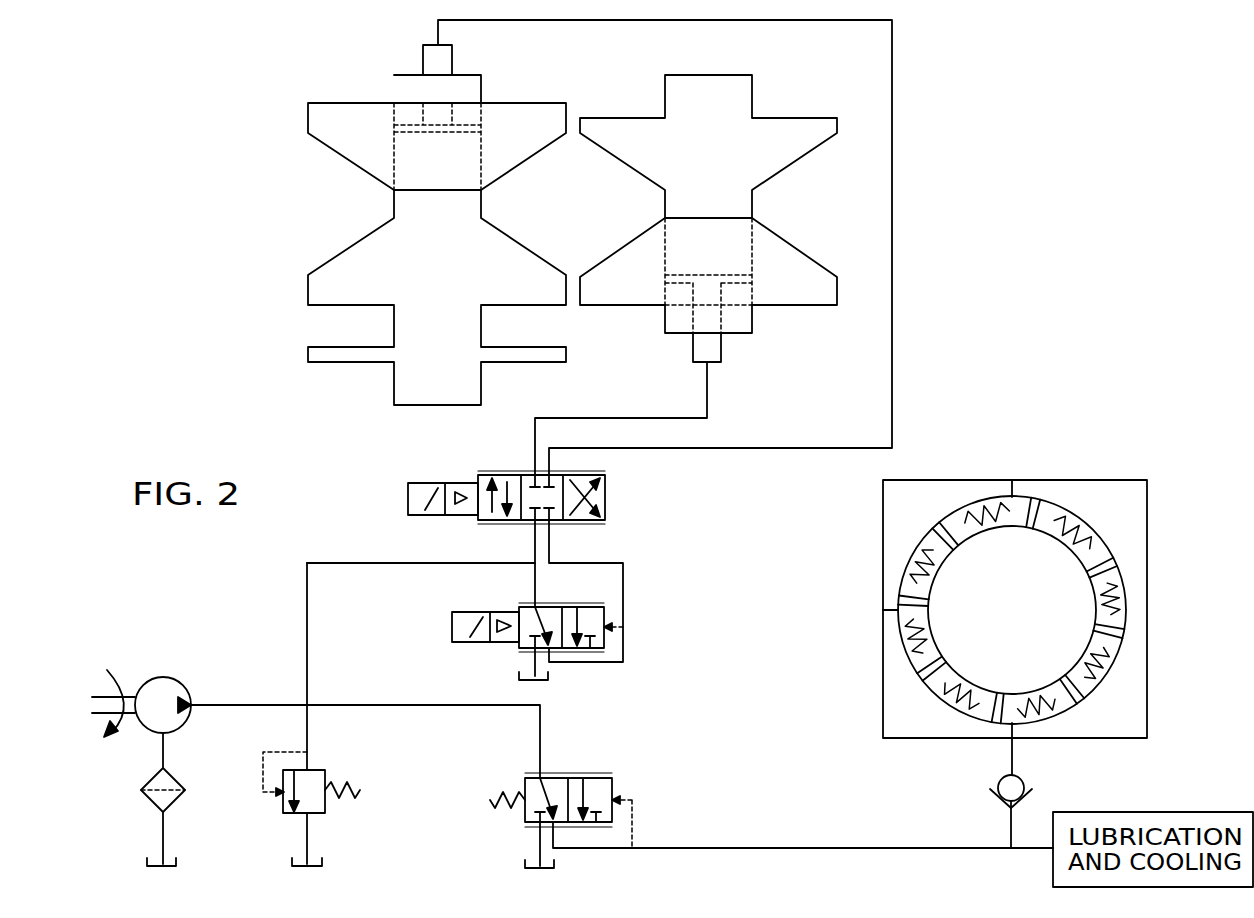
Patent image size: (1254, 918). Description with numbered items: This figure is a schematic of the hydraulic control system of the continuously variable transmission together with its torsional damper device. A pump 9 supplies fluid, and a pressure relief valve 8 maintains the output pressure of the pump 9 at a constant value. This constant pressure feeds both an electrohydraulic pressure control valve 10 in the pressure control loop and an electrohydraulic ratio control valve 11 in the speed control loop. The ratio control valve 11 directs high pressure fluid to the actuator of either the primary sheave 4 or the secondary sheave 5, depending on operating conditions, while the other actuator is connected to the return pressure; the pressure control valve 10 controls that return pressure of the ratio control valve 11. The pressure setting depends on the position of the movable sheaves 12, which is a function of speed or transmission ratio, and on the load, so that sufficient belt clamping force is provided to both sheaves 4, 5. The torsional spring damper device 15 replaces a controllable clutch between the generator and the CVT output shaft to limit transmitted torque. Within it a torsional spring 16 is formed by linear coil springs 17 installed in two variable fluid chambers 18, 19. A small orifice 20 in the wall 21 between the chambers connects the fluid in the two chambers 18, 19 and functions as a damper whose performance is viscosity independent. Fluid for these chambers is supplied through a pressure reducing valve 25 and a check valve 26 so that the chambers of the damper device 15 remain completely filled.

The primary sheave 4 is at (750, 203).
The secondary sheave 5 is at (393, 202).
The pressure relief valve 8 is at (326, 807).
The pump 9 is at (163, 677).
The electrohydraulic pressure control valve 10 is at (607, 640).
The ratio control valve 11 is at (607, 508).
The movable sheaves 12 is at (343, 113).
The torsional spring damper device 15 is at (1100, 480).
The torsional spring 16 is at (1108, 664).
The linear coil springs 17 is at (1077, 532).
The variable fluid chamber 18 is at (1048, 510).
The variable fluid chamber 19 is at (1127, 622).
The small orifice 20 is at (1118, 575).
The wall 21 is at (1105, 565).
The pressure reducing valve 25 is at (612, 783).
The check valve 26 is at (997, 787).